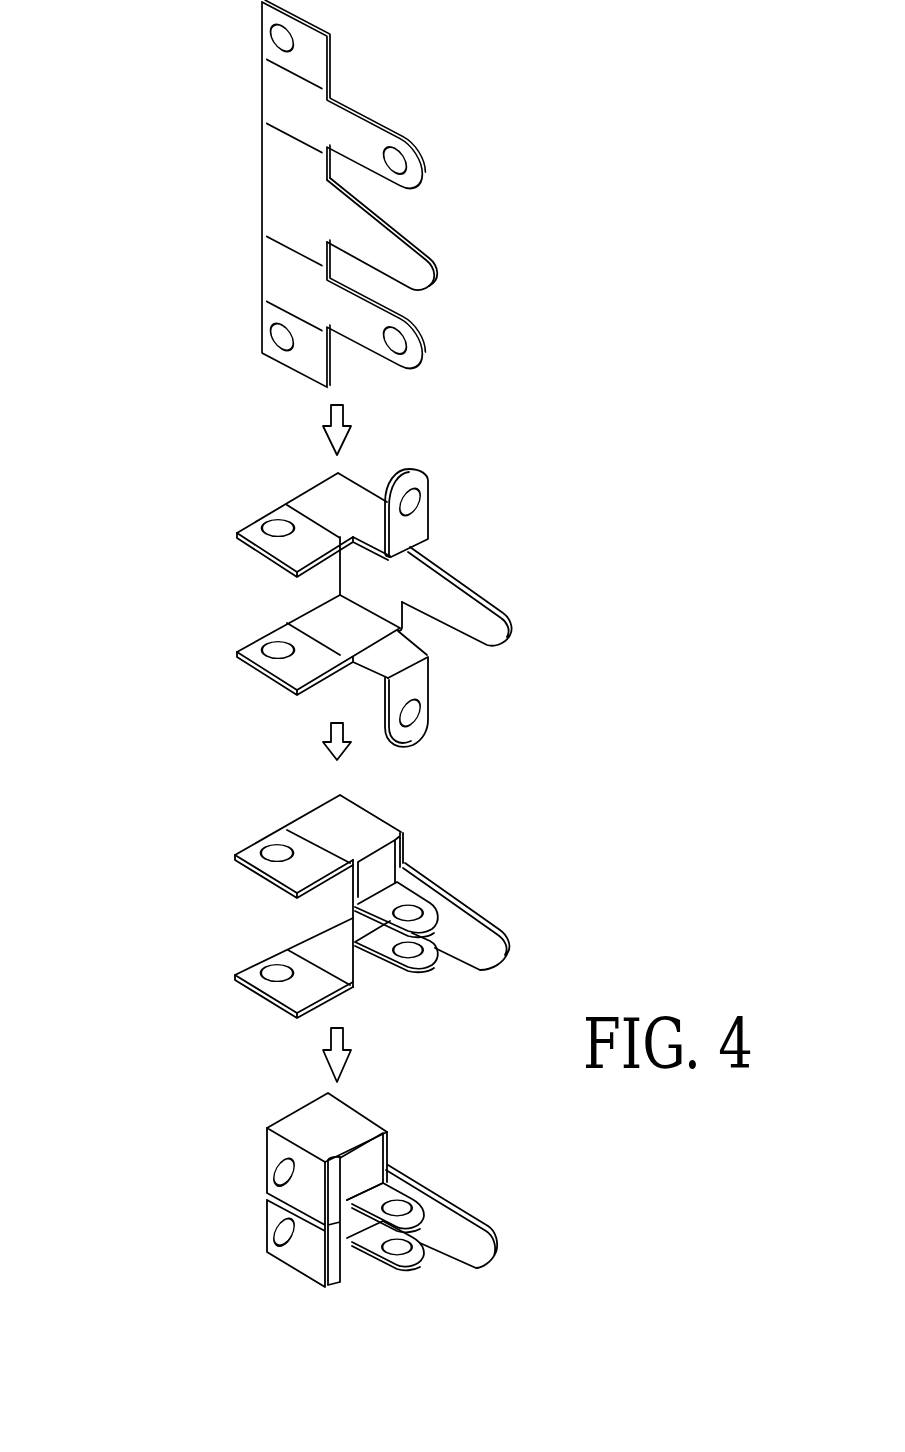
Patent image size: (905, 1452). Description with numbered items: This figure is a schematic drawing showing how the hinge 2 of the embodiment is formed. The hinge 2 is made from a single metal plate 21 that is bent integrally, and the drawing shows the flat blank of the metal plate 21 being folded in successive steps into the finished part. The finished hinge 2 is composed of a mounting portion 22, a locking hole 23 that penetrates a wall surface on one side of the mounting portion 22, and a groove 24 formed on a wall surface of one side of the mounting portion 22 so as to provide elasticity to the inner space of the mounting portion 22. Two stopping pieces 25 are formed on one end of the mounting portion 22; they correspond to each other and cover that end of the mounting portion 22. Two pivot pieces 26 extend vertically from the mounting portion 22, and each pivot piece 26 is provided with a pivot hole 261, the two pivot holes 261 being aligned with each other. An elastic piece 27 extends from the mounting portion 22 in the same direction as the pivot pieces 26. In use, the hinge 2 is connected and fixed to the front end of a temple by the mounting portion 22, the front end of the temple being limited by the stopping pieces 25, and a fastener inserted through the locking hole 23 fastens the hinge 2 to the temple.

The hinge 2 is at (163, 1172).
The metal plate 21 is at (292, 186).
The mounting portion 22 is at (316, 1120).
The locking hole 23 is at (277, 1172).
The groove 24 is at (270, 1200).
The stopping piece 25 is at (373, 1155).
The pivot piece 26 is at (387, 1193).
The pivot hole 261 is at (400, 1207).
The elastic piece 27 is at (473, 1233).